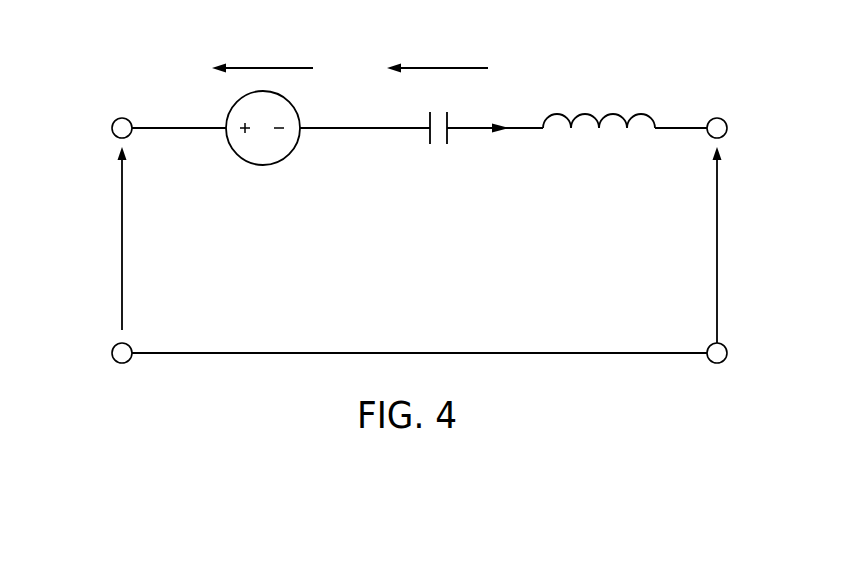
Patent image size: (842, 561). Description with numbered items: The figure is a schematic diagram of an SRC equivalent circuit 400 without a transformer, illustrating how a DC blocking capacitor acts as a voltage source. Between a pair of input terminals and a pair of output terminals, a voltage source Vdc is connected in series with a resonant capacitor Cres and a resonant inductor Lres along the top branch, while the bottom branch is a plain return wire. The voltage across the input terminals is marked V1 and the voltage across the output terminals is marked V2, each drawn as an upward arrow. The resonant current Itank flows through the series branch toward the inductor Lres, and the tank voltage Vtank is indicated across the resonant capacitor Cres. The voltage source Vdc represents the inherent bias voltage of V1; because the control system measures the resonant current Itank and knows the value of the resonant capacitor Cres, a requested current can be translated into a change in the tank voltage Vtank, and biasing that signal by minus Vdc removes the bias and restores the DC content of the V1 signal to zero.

The SRC equivalent circuit 400 is at (119, 39).
The Vdc voltage Vdc is at (262, 96).
The resonant capacitor Cres is at (439, 146).
The resonant inductor Lres is at (599, 138).
The tank voltage Vtank is at (437, 50).
The resonant current Itank is at (502, 144).
The V1 signal V1 is at (107, 238).
The V2 voltage V2 is at (702, 245).